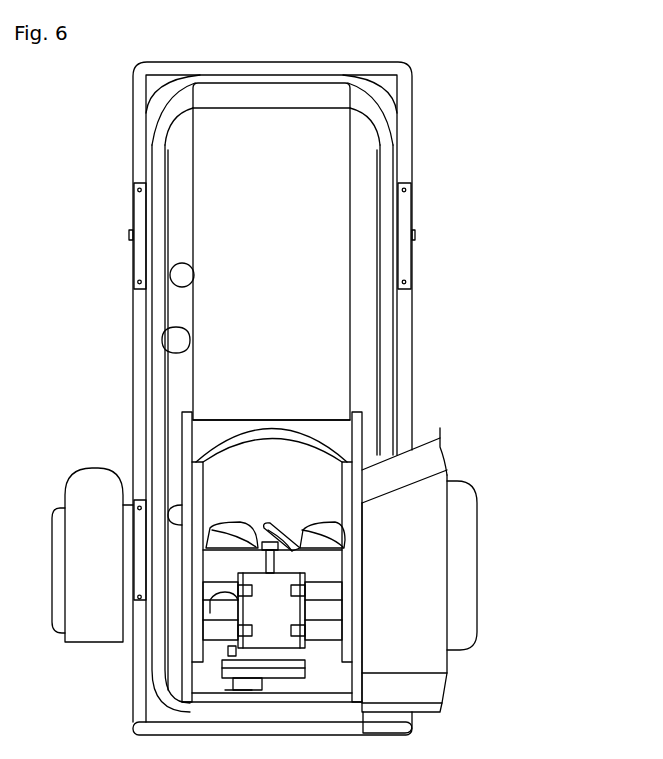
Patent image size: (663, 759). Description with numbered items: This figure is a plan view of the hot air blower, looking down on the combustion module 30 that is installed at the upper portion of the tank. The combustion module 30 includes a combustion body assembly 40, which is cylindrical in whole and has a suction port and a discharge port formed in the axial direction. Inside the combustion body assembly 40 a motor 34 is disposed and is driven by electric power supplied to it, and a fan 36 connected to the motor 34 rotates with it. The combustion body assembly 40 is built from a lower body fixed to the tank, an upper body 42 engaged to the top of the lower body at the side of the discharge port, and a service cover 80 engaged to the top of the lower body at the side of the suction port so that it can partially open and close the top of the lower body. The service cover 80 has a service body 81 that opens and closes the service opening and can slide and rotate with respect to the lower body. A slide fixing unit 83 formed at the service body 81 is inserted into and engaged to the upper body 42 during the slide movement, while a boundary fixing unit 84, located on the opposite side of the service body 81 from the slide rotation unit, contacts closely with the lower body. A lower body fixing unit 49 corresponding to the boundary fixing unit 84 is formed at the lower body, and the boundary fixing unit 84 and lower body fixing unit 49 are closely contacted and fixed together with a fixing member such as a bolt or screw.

The combustion module 30 is at (362, 279).
The combustion body assembly 40 is at (355, 333).
The upper body 42 is at (320, 233).
The lower body fixing unit 49 is at (187, 670).
The boundary fixing unit 84 is at (360, 568).
The fan 36 is at (225, 535).
The motor 34 is at (285, 613).
The slide fixing unit 83 is at (440, 437).
The service body 81 is at (427, 523).
The service cover 80 is at (447, 653).